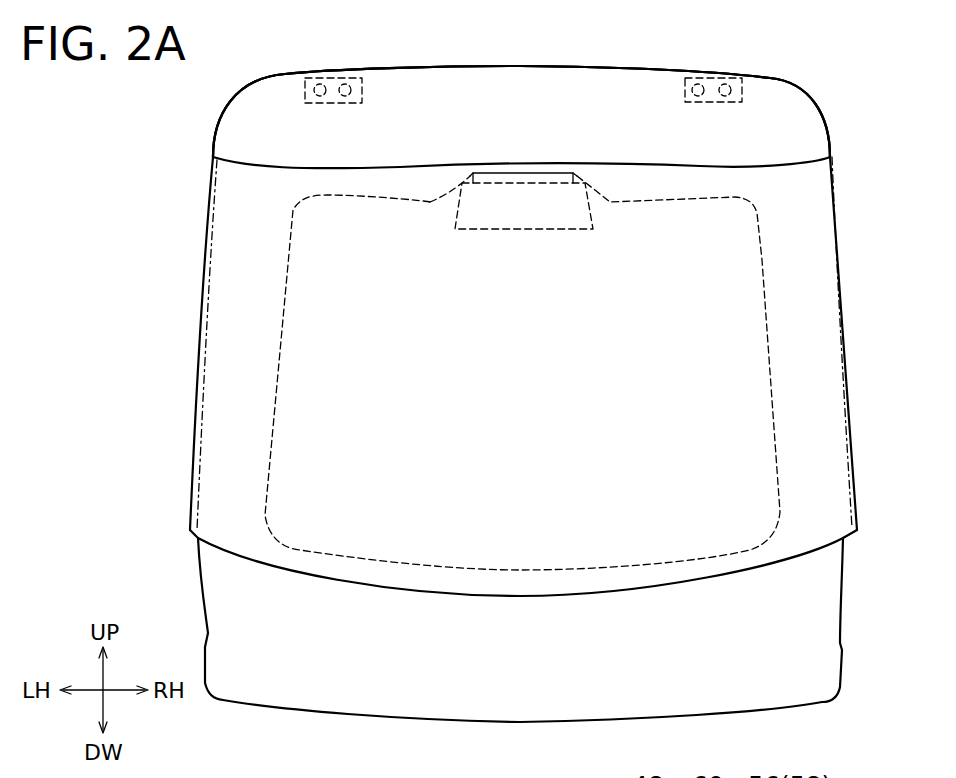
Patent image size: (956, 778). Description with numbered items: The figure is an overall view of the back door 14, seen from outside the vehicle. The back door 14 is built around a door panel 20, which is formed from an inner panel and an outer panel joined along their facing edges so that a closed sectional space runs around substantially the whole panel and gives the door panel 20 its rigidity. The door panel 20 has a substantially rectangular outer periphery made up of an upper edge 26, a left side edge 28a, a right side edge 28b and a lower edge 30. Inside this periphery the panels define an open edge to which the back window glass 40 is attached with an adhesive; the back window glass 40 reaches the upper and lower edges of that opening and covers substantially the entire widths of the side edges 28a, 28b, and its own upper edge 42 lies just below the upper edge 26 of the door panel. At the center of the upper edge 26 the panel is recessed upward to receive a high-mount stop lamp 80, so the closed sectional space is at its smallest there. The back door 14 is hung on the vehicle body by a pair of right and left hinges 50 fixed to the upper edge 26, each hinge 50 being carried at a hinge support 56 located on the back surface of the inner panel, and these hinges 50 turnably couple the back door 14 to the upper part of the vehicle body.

The back door 14 is at (832, 82).
The door panel 20 is at (828, 127).
The upper edge 26 is at (522, 95).
The upper edge of the back window glass 42 is at (613, 163).
The side edge 28a is at (202, 290).
The side edge 28b is at (843, 260).
The back window glass 40 is at (852, 427).
The lower edge 30 is at (555, 702).
The high-mount stop lamp 80 is at (523, 185).
The hinge 50 is at (457, 100).
The hinge support 56 is at (333, 103).